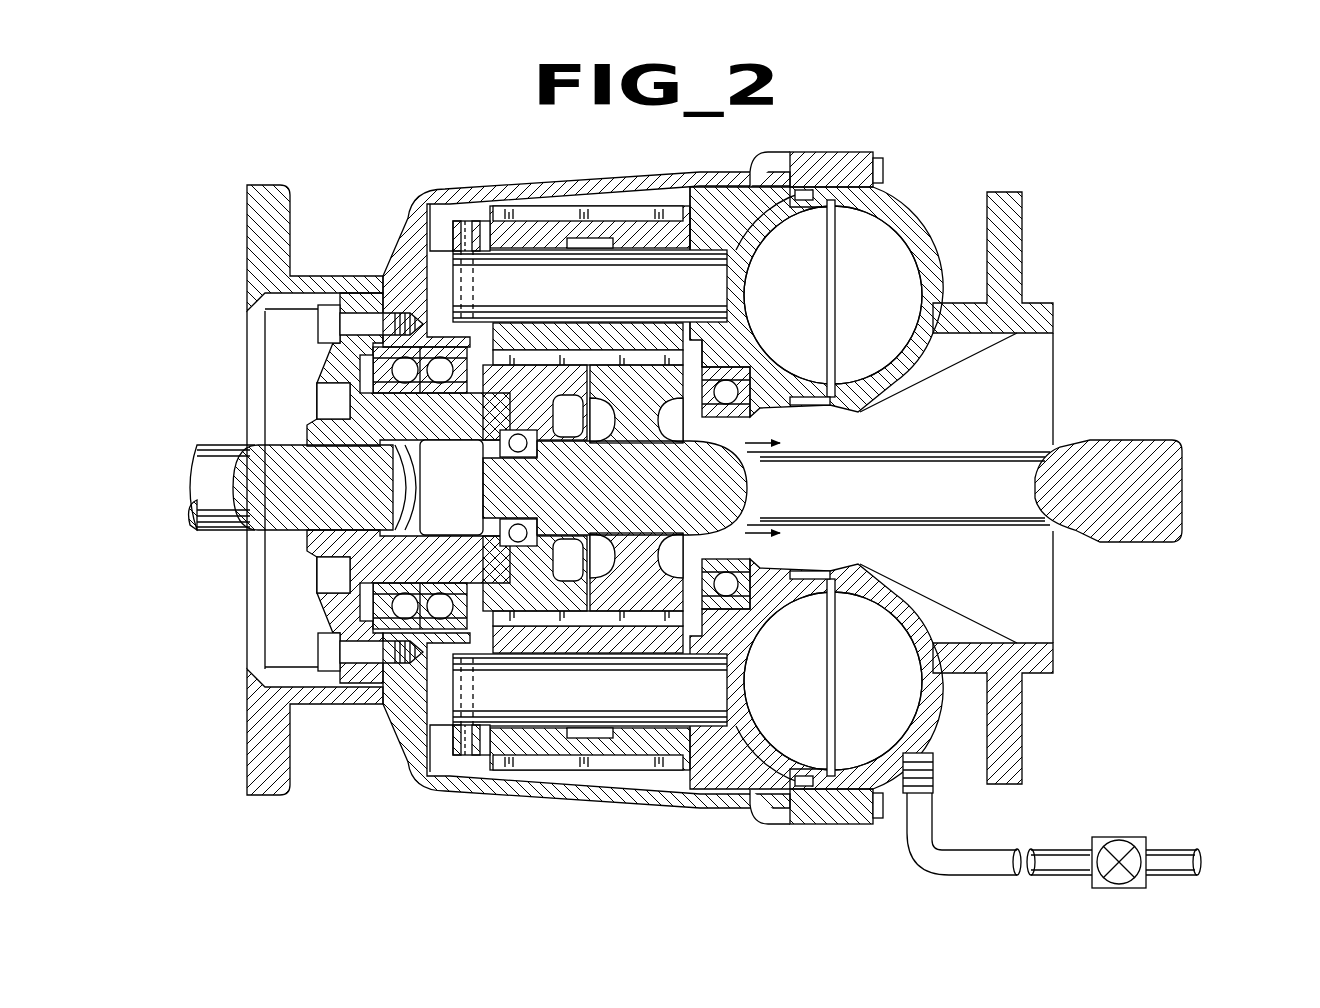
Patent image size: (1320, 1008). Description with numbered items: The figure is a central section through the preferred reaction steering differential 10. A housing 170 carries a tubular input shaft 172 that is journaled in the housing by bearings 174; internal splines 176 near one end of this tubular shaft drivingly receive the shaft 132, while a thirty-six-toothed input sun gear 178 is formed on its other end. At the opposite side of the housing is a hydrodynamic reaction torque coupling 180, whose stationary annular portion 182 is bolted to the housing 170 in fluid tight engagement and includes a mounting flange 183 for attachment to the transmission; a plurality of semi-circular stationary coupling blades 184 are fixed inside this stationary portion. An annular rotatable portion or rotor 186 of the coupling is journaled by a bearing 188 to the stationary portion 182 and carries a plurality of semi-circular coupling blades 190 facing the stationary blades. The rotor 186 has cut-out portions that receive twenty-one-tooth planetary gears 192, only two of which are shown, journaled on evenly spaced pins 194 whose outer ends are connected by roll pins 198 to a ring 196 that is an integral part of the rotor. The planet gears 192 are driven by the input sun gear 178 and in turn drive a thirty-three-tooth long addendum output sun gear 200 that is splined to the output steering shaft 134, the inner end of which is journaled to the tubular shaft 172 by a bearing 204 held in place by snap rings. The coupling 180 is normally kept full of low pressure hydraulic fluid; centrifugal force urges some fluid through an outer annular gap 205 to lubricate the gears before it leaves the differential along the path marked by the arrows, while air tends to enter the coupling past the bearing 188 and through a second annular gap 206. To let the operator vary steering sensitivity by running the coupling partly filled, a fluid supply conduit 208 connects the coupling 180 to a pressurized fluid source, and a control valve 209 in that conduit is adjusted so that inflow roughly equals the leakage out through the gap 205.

The steering differential 10 is at (952, 132).
The shaft 132 is at (205, 528).
The output steering shaft 134 is at (1185, 452).
The housing 170 is at (455, 189).
The tubular input shaft 172 is at (320, 410).
The bearings 174 is at (378, 354).
The internal splines 176 is at (312, 534).
The input sun gear 178 is at (503, 402).
The hydrodynamic reaction torque coupling 180 is at (886, 198).
The stationary annular portion 182 is at (905, 232).
The mounting flange 183 is at (1022, 202).
The stationary coupling blades 184 is at (848, 288).
The rotor 186 is at (752, 222).
The bearing 188 is at (768, 362).
The coupling blades 190 is at (763, 288).
The planetary gears 192 is at (583, 206).
The pins 194 is at (575, 300).
The ring 196 is at (458, 236).
The roll pins 198 is at (452, 226).
The output sun gear 200 is at (613, 402).
The bearing 204 is at (497, 450).
The outer annular gap 205 is at (813, 188).
The second annular gap 206 is at (807, 400).
The fluid supply conduit 208 is at (1033, 850).
The control valve 209 is at (1119, 838).